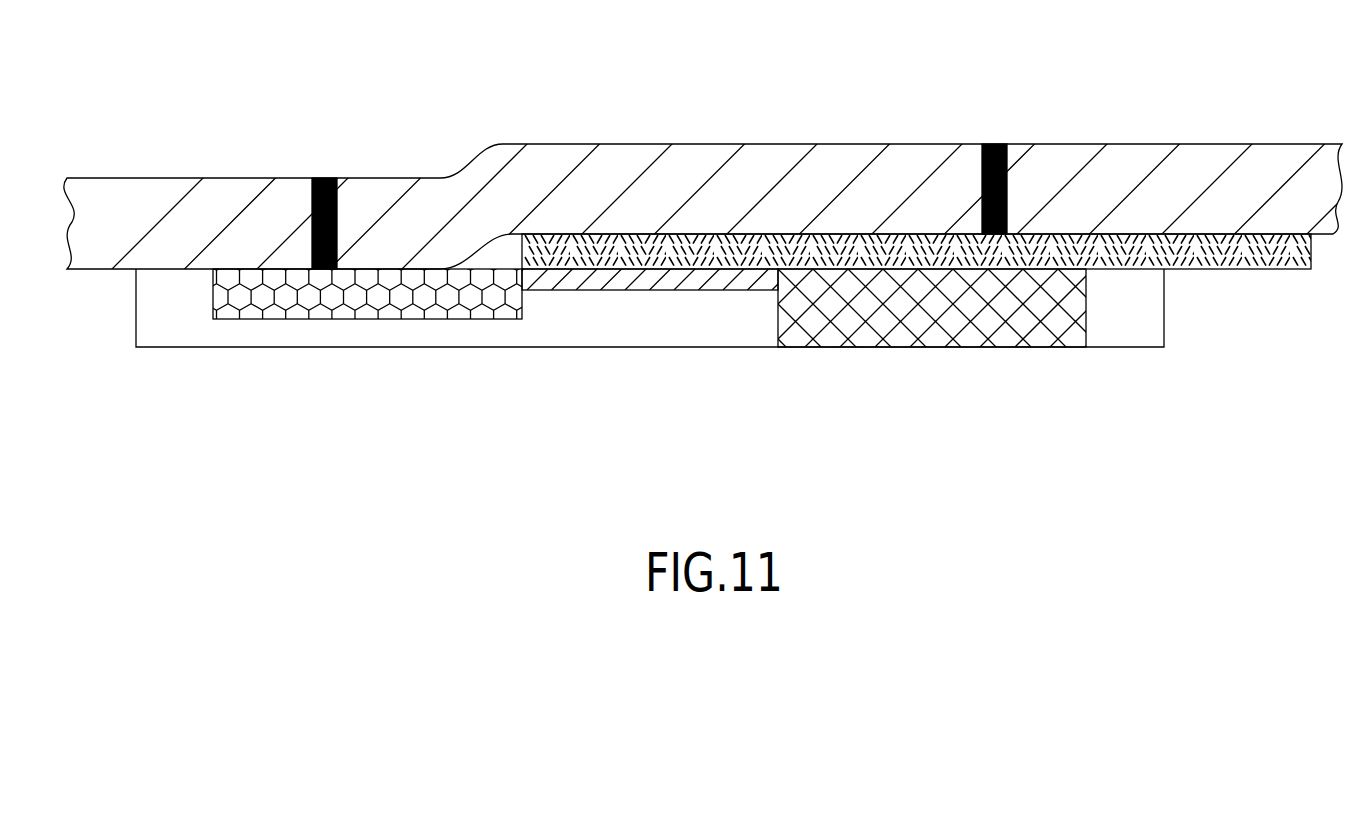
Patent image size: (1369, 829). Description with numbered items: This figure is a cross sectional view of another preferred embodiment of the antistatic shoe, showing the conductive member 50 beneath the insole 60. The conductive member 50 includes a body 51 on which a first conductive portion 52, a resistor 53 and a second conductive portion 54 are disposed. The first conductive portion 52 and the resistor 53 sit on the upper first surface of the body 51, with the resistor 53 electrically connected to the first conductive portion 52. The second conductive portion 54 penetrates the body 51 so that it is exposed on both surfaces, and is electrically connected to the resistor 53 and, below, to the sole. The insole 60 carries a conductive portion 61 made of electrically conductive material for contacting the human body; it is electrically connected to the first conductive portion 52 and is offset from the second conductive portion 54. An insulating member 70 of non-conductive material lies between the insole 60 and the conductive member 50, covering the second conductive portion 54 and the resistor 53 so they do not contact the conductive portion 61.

The conductive member 50 is at (677, 358).
The body 51 is at (1112, 328).
The first conductive portion 52 is at (375, 298).
The resistor 53 is at (680, 280).
The second conductive portion 54 is at (903, 318).
The insole 60 is at (1133, 177).
The conductive portion 61 is at (718, 185).
The insulating member 70 is at (1230, 258).